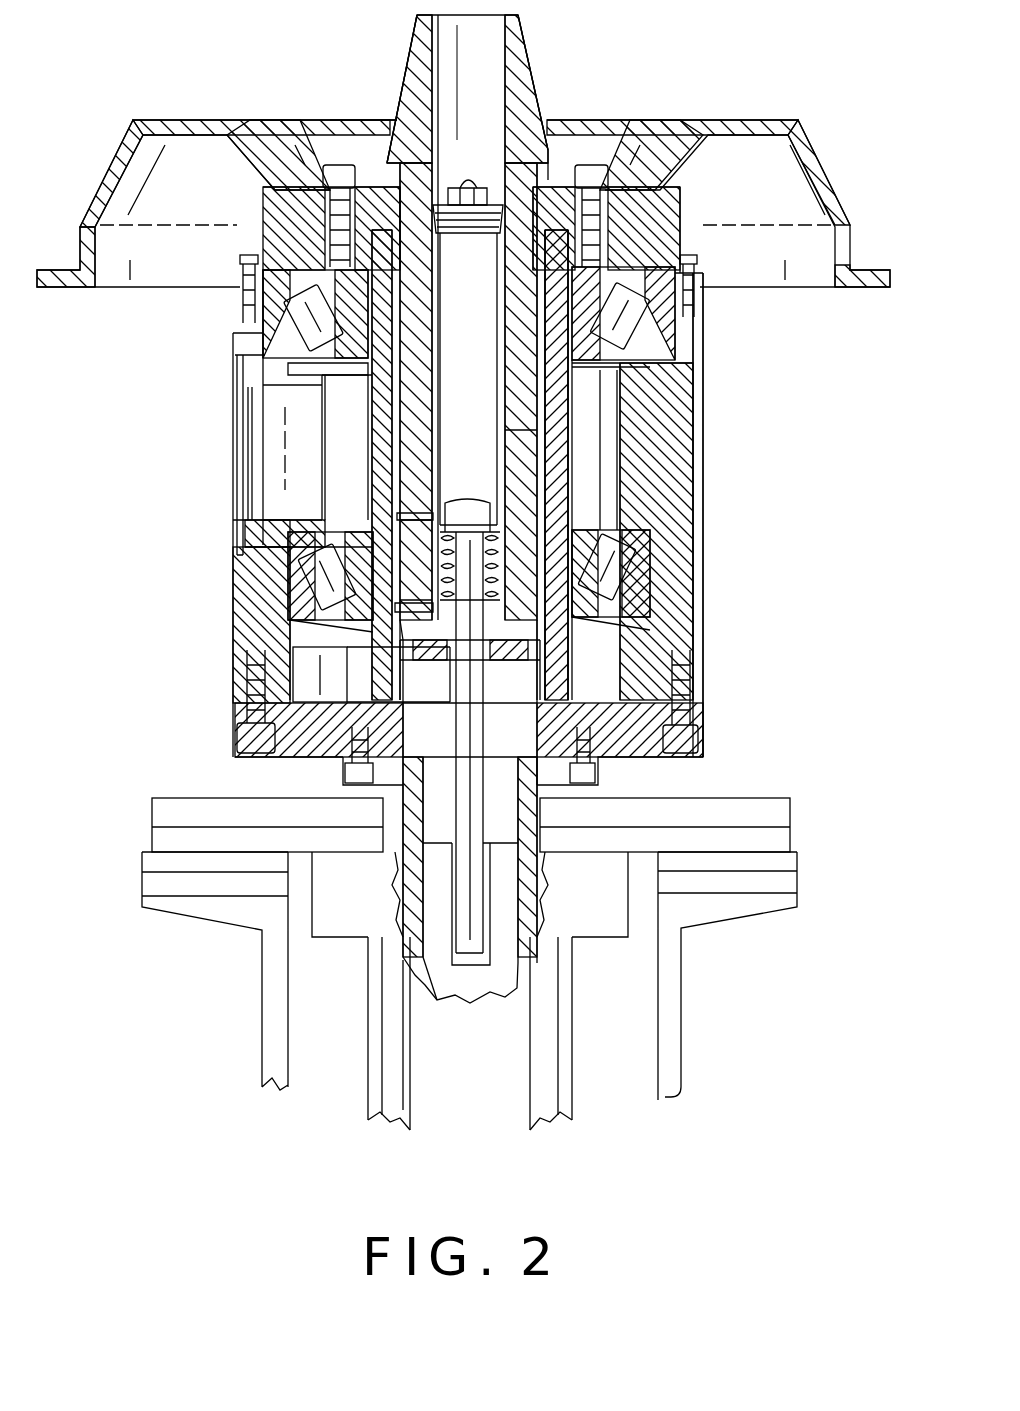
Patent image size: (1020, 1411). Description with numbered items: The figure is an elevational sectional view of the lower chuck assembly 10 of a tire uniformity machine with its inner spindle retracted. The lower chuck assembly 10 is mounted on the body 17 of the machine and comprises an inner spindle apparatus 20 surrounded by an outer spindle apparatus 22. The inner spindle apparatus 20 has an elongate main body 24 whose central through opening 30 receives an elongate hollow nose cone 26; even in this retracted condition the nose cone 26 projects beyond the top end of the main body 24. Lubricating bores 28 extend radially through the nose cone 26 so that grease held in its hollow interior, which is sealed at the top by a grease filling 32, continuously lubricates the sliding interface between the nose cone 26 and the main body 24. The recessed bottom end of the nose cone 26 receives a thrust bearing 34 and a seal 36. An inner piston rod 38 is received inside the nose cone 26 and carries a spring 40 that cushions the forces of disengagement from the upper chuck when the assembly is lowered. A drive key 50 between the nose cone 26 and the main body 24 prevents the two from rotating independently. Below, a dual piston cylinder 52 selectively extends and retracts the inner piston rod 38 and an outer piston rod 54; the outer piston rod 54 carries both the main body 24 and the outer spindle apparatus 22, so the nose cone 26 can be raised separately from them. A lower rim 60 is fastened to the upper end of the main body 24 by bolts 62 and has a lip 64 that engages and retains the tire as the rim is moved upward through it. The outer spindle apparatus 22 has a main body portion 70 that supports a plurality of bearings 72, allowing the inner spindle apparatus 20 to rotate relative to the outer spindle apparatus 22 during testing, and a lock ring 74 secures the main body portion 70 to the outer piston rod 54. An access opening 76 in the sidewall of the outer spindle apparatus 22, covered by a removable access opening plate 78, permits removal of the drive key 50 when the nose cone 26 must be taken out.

The lower chuck assembly 10 is at (155, 577).
The body 17 is at (262, 933).
The inner spindle apparatus 20 is at (546, 96).
The outer spindle apparatus 22 is at (708, 508).
The main body 24 is at (568, 232).
The nose cone 26 is at (518, 58).
The lubricating bores 28 is at (523, 423).
The through opening 30 is at (550, 463).
The grease filling 32 is at (380, 125).
The thrust bearing 34 is at (540, 648).
The seal 36 is at (533, 682).
The inner piston rod 38 is at (460, 800).
The spring 40 is at (298, 635).
The drive key 50 is at (300, 537).
The dual piston cylinder 52 is at (372, 1104).
The outer piston rod 54 is at (152, 825).
The lower rim 60 is at (820, 152).
The bolts 62 is at (336, 172).
The lip 64 is at (870, 268).
The main body portion 70 is at (690, 548).
The bearings 72 is at (660, 345).
The lock ring 74 is at (598, 775).
The access opening 76 is at (268, 437).
The access opening plate 78 is at (242, 480).